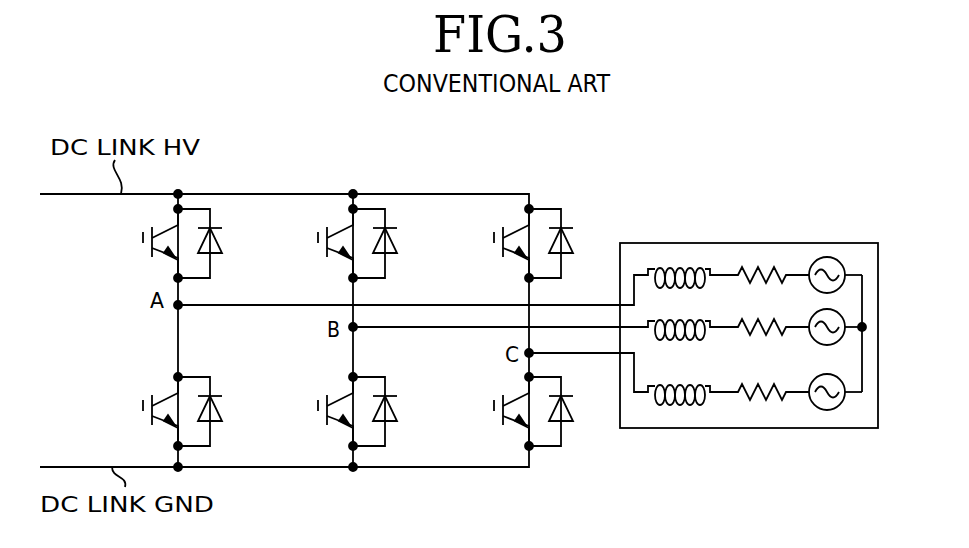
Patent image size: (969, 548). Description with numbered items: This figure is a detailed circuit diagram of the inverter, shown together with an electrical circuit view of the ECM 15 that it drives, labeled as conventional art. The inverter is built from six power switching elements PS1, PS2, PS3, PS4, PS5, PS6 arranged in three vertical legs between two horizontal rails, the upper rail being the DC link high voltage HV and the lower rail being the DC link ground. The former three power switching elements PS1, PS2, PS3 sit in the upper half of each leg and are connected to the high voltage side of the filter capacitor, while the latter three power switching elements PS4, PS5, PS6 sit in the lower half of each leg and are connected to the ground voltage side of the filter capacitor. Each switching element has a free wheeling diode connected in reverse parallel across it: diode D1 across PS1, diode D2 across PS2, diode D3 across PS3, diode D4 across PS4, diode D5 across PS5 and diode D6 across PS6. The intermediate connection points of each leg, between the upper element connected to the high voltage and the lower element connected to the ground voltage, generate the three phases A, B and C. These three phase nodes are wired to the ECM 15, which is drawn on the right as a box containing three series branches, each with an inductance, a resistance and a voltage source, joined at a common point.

The ECM 15 is at (748, 243).
The power switching element PS1 is at (137, 243).
The power switching element PS2 is at (312, 243).
The power switching element PS3 is at (488, 243).
The power switching element PS4 is at (137, 411).
The power switching element PS5 is at (312, 411).
The power switching element PS6 is at (488, 411).
The free wheeling diode D1 is at (216, 243).
The free wheeling diode D2 is at (391, 243).
The free wheeling diode D3 is at (567, 243).
The free wheeling diode D4 is at (216, 411).
The free wheeling diode D5 is at (391, 411).
The free wheeling diode D6 is at (567, 411).